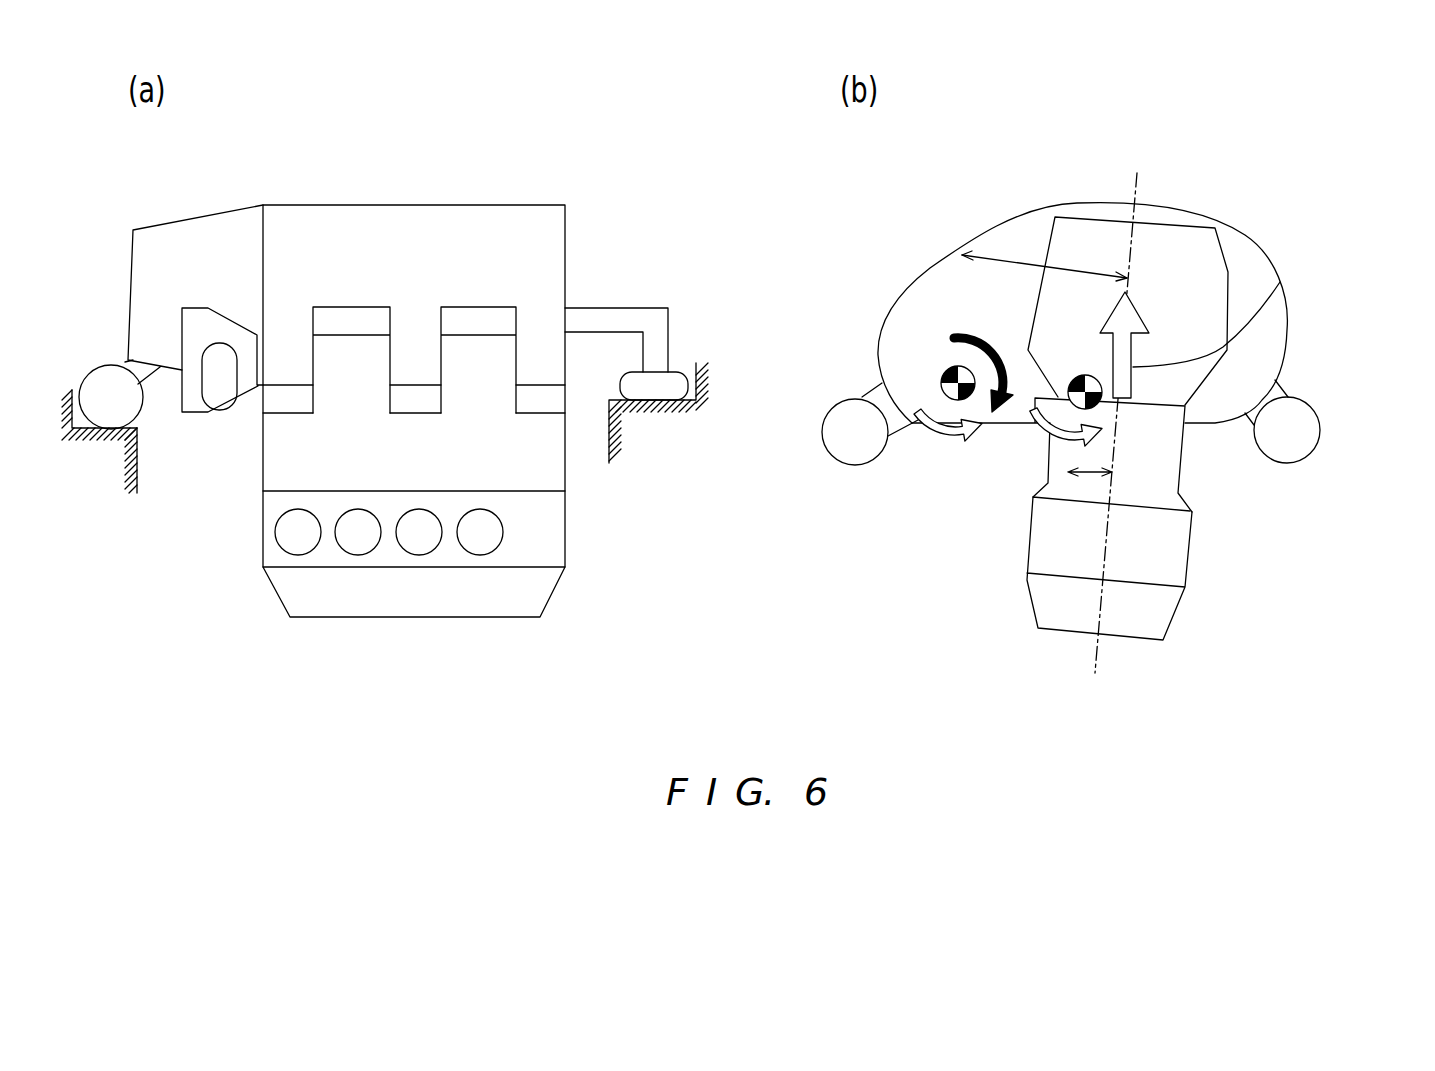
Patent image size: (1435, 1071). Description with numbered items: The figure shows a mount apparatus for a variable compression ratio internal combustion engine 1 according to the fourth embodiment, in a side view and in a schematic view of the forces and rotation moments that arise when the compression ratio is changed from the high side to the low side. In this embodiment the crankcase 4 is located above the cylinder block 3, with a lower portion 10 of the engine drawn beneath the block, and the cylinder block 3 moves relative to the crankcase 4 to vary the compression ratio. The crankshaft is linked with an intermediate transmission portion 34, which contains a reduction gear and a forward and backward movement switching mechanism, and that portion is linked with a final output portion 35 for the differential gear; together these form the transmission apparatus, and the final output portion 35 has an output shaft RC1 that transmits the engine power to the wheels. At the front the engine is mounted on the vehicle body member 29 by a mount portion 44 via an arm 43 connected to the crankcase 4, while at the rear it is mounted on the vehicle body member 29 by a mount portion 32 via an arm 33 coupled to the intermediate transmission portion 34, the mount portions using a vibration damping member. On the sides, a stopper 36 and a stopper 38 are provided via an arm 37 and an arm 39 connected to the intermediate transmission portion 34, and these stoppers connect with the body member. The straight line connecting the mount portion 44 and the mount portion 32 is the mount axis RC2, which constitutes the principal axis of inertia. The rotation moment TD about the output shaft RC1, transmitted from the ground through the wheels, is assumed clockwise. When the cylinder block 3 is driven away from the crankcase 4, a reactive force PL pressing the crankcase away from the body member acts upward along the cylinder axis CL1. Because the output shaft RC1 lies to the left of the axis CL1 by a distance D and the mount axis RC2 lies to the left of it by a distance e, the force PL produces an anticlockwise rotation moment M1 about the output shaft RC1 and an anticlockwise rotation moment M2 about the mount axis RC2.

The internal combustion engine 1 is at (647, 640).
The cylinder block 3 is at (590, 497).
The crankcase 4 is at (420, 178).
The crankcase / oil pan 10 is at (592, 560).
The vehicle body member 29 is at (127, 465).
The mount portion 32 is at (168, 493).
The arm 33 is at (125, 362).
The intermediate transmission portion 34 is at (150, 250).
The final output portion 35 is at (195, 473).
The stopper 36 is at (247, 462).
The arm 37 is at (918, 485).
The stopper 38 is at (1330, 473).
The arm 39 is at (1220, 478).
The arm 43 is at (643, 292).
The mount portion 44 is at (733, 303).
The output shaft RC1 is at (950, 366).
The mount axis RC2 is at (1078, 378).
The rotation moment TD is at (975, 337).
The distance D is at (1044, 264).
The axis of the cylinder CL1 is at (1180, 172).
The force PL is at (1265, 296).
The rotation moment M1 is at (965, 480).
The rotation moment M2 is at (1048, 432).
The distance e is at (1090, 459).